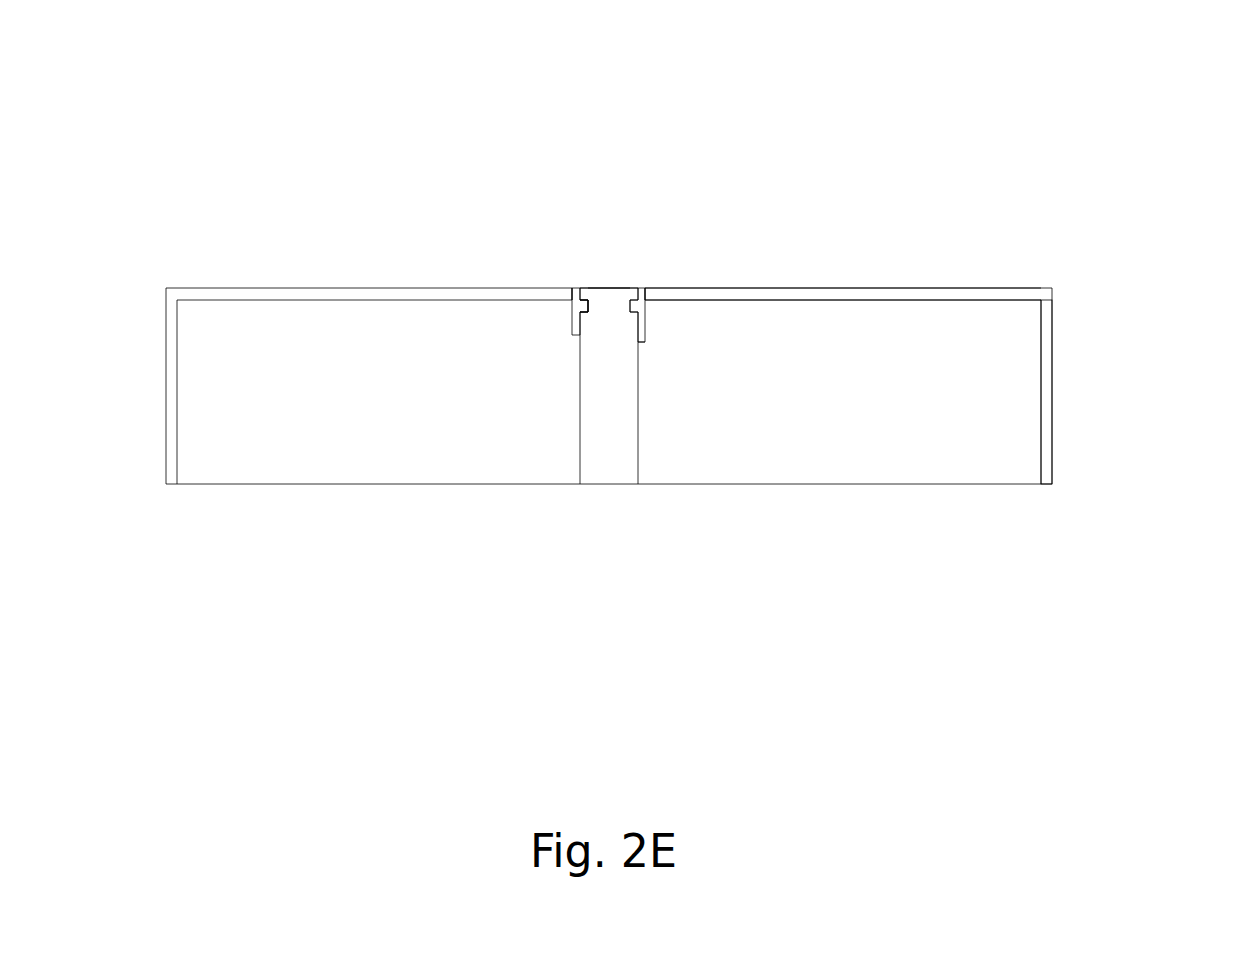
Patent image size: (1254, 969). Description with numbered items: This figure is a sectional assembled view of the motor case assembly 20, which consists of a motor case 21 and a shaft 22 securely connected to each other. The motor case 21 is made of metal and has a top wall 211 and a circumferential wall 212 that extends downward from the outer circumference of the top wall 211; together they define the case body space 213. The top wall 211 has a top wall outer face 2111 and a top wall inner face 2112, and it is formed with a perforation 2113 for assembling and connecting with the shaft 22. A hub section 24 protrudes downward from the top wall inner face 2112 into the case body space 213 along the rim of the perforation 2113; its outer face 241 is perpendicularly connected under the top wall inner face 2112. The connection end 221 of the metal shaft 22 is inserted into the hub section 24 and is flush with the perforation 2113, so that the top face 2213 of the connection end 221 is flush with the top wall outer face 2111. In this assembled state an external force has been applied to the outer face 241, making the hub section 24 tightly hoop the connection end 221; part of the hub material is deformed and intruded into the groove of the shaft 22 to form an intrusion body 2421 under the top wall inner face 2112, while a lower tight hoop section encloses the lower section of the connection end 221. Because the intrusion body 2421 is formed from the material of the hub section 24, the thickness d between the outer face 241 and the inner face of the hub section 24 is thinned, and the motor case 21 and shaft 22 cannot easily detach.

The motor case assembly 20 is at (1232, 48).
The motor case 21 is at (649, 391).
The top wall 211 is at (624, 391).
The top wall outer face 2111 is at (928, 288).
The top wall inner face 2112 is at (977, 300).
The perforation 2113 is at (582, 288).
The circumferential wall 212 is at (1053, 387).
The case body space 213 is at (917, 427).
The shaft 22 is at (555, 380).
The connection end 221 is at (628, 287).
The top face 2213 is at (598, 288).
The hub section 24 is at (494, 287).
The intrusion body 2421 is at (588, 288).
The outer face 241 is at (716, 364).
The thickness d is at (642, 343).